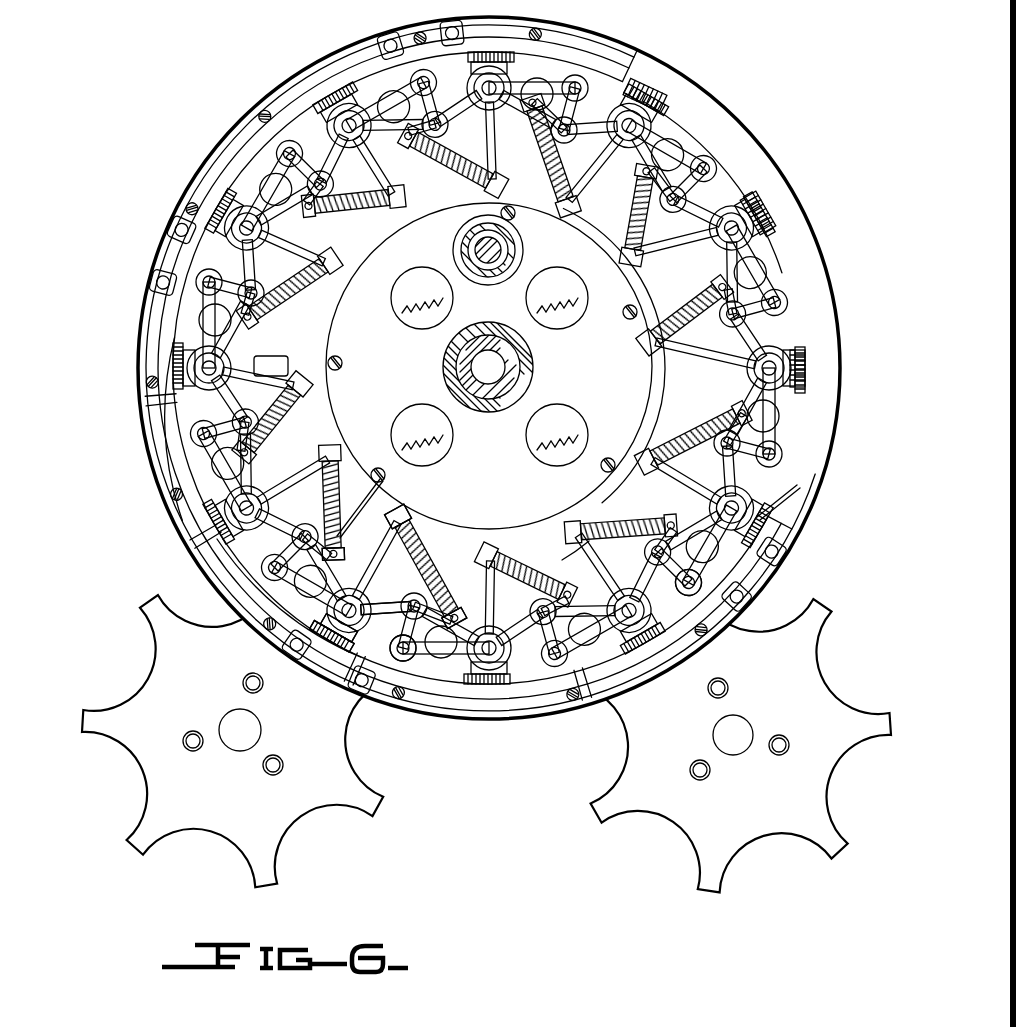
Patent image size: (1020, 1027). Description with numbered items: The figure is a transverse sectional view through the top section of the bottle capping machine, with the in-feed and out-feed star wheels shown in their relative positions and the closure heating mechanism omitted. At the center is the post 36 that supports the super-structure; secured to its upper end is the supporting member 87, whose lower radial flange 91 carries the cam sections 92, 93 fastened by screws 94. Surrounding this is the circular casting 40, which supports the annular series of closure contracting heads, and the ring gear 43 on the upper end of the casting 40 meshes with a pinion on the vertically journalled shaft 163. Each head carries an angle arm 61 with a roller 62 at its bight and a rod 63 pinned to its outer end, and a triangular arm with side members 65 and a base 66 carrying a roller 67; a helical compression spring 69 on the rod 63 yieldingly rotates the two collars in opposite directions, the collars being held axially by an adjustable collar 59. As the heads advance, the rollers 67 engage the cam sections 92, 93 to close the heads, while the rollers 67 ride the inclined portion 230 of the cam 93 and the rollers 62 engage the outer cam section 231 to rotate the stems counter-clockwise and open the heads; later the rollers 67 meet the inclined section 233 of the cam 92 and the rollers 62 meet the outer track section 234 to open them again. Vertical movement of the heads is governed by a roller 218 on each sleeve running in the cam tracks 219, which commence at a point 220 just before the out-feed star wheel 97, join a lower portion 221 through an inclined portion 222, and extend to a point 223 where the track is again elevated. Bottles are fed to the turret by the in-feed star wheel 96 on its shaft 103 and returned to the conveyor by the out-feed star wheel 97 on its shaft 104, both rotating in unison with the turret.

The cam tracks 219 is at (318, 82).
The roller 218 is at (645, 104).
The point 223 is at (152, 268).
The outer track section 234 is at (160, 335).
The inclined section 233 is at (264, 362).
The screws 94 is at (342, 363).
The shaft 163 is at (506, 250).
The cam section 93 is at (608, 243).
The post 36 is at (520, 360).
The supporting member 87 is at (525, 386).
The ring gear 43 is at (428, 438).
The lower radial flange 91 is at (489, 366).
The lower portion 221 is at (200, 450).
The inclined portion 222 is at (214, 560).
The cam section 92 is at (396, 508).
The roller 67 is at (337, 554).
The helical compression spring 69 is at (404, 546).
The rod 63 is at (412, 568).
The base 66 is at (404, 572).
The angle arm 61 is at (466, 614).
The side members 65 is at (526, 604).
The circular casting 40 is at (555, 550).
The adjustable collar 59 is at (340, 645).
The roller 62 is at (420, 668).
The inclined portion 230 is at (688, 457).
The outer cam section 231 is at (790, 488).
The point 220 is at (772, 540).
The star wheel 96 is at (340, 760).
The out-feed star wheel 97 is at (815, 684).
The shaft 103 is at (254, 724).
The shaft 104 is at (745, 722).